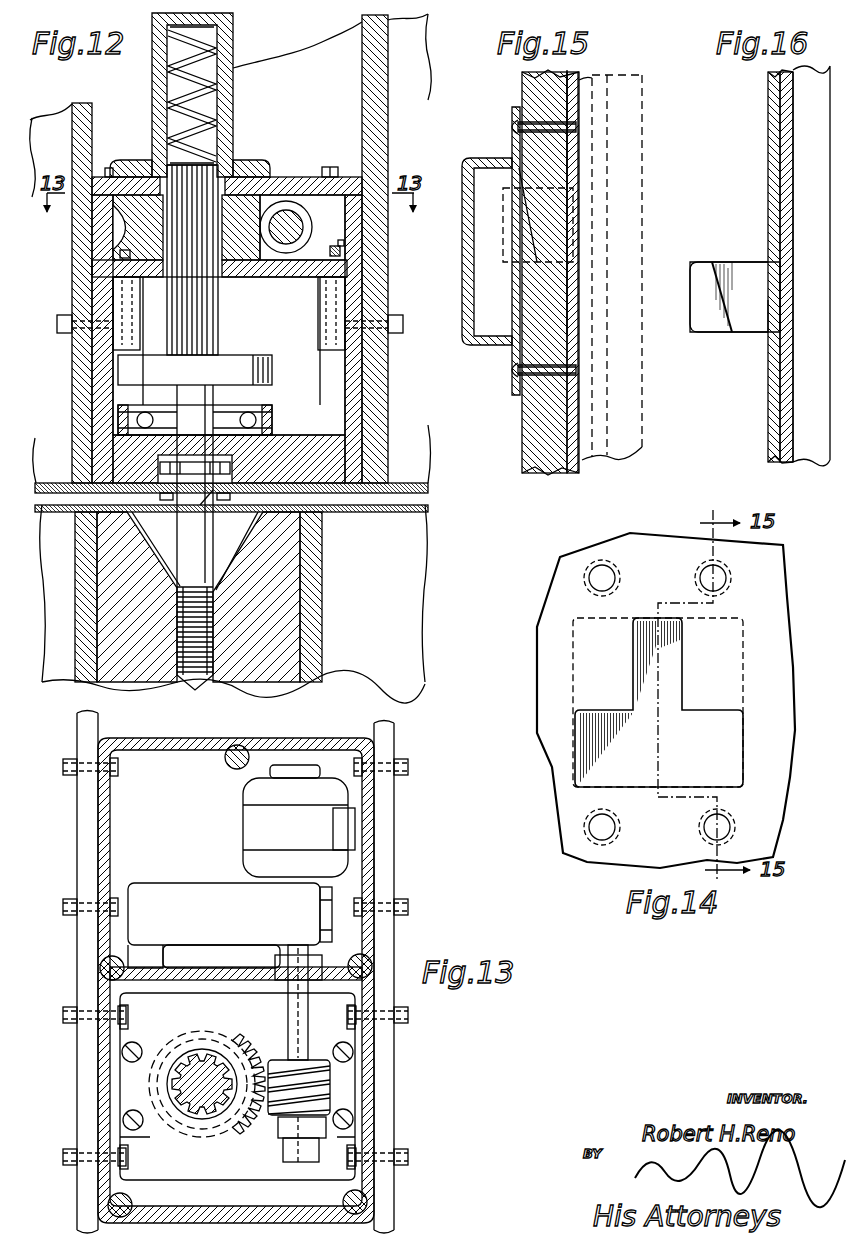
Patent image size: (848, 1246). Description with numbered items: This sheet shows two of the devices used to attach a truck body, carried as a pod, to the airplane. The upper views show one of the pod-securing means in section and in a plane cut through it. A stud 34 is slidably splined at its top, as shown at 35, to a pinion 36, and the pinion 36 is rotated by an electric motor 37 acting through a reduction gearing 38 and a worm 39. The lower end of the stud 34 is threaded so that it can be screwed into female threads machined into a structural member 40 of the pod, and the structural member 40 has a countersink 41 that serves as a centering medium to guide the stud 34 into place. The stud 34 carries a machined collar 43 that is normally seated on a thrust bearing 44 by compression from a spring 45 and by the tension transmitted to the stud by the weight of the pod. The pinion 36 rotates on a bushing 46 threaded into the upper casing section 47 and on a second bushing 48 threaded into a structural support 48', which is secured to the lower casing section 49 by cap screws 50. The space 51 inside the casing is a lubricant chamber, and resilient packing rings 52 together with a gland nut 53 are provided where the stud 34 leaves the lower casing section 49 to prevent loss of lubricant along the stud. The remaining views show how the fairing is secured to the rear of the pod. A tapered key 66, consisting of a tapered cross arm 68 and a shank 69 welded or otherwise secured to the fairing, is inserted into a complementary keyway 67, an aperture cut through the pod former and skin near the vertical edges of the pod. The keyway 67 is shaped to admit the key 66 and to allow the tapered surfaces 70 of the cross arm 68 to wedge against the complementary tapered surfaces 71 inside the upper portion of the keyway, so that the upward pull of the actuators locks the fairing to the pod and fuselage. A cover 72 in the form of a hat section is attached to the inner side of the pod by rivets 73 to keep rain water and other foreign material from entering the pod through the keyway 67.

In FIG. 12, the stud 34 is at (207, 541).
In FIG. 13, the stud 34 is at (196, 1113).
In FIG. 12, the splined portion 35 is at (220, 326).
In FIG. 13, the splined portion 35 is at (221, 1047).
In FIG. 12, the pinion 36 is at (249, 212).
In FIG. 13, the pinion 36 is at (253, 1136).
In FIG. 13, the electric motor 37 is at (262, 827).
In FIG. 13, the reduction gearing 38 is at (246, 882).
In FIG. 12, the worm 39 is at (303, 224).
In FIG. 13, the worm 39 is at (326, 1088).
In FIG. 12, the structural member 40 is at (290, 626).
In FIG. 12, the countersink 41 is at (236, 546).
In FIG. 12, the machined collar 43 is at (257, 366).
In FIG. 12, the thrust bearing 44 is at (259, 411).
In FIG. 12, the spring 45 is at (170, 110).
In FIG. 12, the bushing 46 is at (238, 174).
In FIG. 12, the upper casing section 47 is at (233, 128).
In FIG. 12, the bushing 48 is at (181, 251).
In FIG. 12, the structural support 48' is at (284, 254).
In FIG. 12, the lower casing section 49 is at (345, 426).
In FIG. 13, the lower casing section 49 is at (105, 1050).
In FIG. 12, the cap screws 50 is at (337, 250).
In FIG. 13, the cap screws 50 is at (128, 1117).
In FIG. 12, the lubricant chamber 51 is at (308, 356).
In FIG. 13, the lubricant chamber 51 is at (336, 1184).
In FIG. 12, the resilient packing rings 52 is at (160, 467).
In FIG. 12, the gland nut 53 is at (207, 498).
In FIG. 16, the tapered key 66 is at (744, 248).
In FIG. 14, the keyway 67 is at (670, 697).
In FIG. 15, the keyway 67 is at (560, 298).
In FIG. 16, the tapered cross arm 68 is at (700, 309).
In FIG. 16, the shank 69 is at (756, 318).
In FIG. 16, the tapered surfaces 70 is at (732, 292).
In FIG. 15, the complementary tapered surfaces 71 is at (525, 232).
In FIG. 15, the cover 72 is at (470, 286).
In FIG. 14, the rivets 73 is at (708, 578).
In FIG. 15, the rivets 73 is at (508, 126).